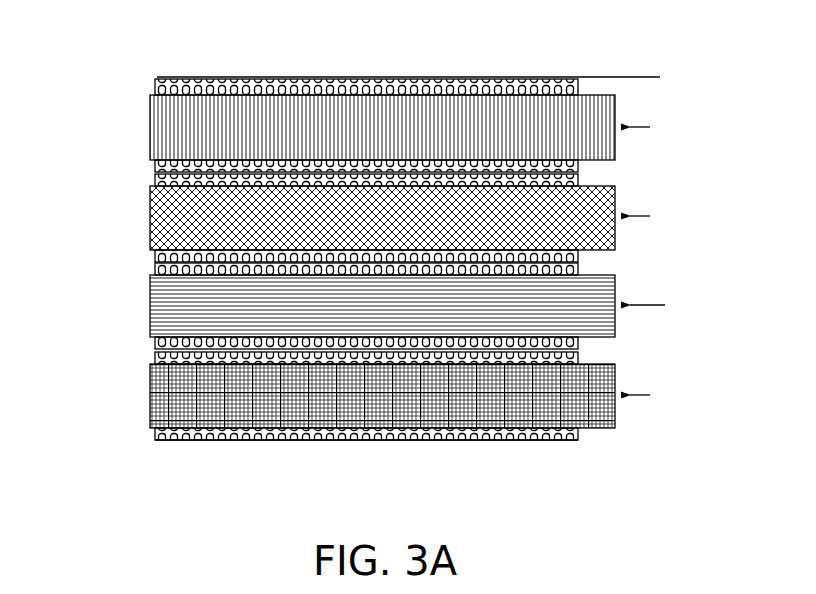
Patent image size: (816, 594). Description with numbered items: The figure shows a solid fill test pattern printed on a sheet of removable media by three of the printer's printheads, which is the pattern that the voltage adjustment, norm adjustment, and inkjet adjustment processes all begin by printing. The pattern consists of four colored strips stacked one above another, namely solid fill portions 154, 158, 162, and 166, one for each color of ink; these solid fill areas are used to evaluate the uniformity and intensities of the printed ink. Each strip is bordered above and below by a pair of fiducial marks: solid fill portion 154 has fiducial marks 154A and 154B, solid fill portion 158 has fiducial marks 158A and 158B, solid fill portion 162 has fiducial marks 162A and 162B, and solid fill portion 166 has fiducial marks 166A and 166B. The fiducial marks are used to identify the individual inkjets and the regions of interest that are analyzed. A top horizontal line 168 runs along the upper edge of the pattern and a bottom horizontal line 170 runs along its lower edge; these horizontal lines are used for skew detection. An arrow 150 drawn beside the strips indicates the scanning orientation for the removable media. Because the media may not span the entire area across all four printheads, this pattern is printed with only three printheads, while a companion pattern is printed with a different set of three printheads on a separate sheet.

The arrow 150 is at (655, 303).
The solid fill portion 154 is at (150, 128).
The fiducial mark 154A is at (580, 84).
The fiducial mark 154B is at (580, 167).
The solid fill portion 158 is at (150, 218).
The fiducial mark 158A is at (580, 177).
The fiducial mark 158B is at (580, 258).
The solid fill portion 162 is at (150, 305).
The fiducial mark 162A is at (150, 268).
The fiducial mark 162B is at (150, 343).
The solid fill portion 166 is at (150, 395).
The fiducial mark 166A is at (580, 355).
The fiducial mark 166B is at (580, 436).
The top horizontal line 168 is at (470, 77).
The bottom horizontal line 170 is at (485, 440).